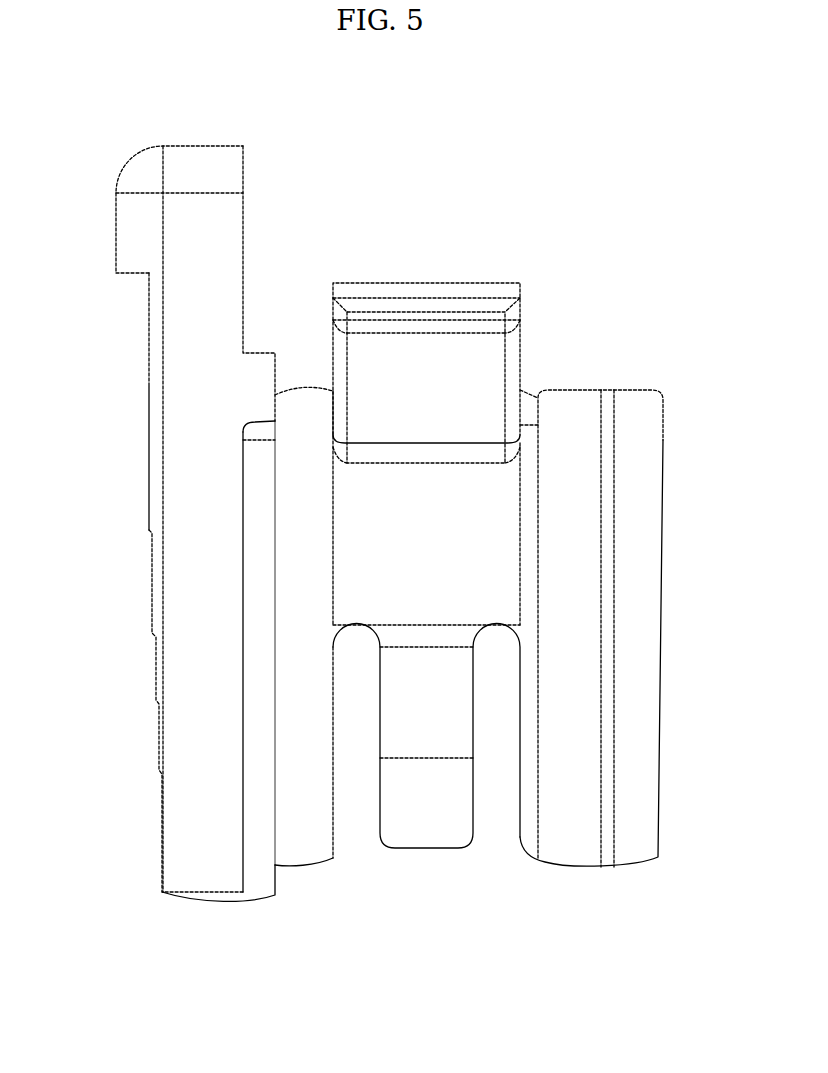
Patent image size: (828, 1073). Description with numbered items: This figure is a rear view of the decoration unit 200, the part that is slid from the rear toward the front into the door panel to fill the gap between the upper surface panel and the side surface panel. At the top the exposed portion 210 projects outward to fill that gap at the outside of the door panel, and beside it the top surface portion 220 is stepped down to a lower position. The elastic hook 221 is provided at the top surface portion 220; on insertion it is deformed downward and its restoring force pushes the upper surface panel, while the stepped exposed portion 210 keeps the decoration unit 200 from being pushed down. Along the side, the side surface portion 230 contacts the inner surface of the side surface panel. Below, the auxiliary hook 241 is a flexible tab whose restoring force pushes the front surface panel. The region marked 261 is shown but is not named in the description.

The decoration unit 200 is at (569, 221).
The exposed portion 210 is at (210, 143).
The top surface portion 220 is at (590, 386).
The elastic hook 221 is at (422, 372).
The side surface portion 230 is at (148, 532).
The auxiliary hook 241 is at (426, 836).
The edge portion 261 is at (149, 382).